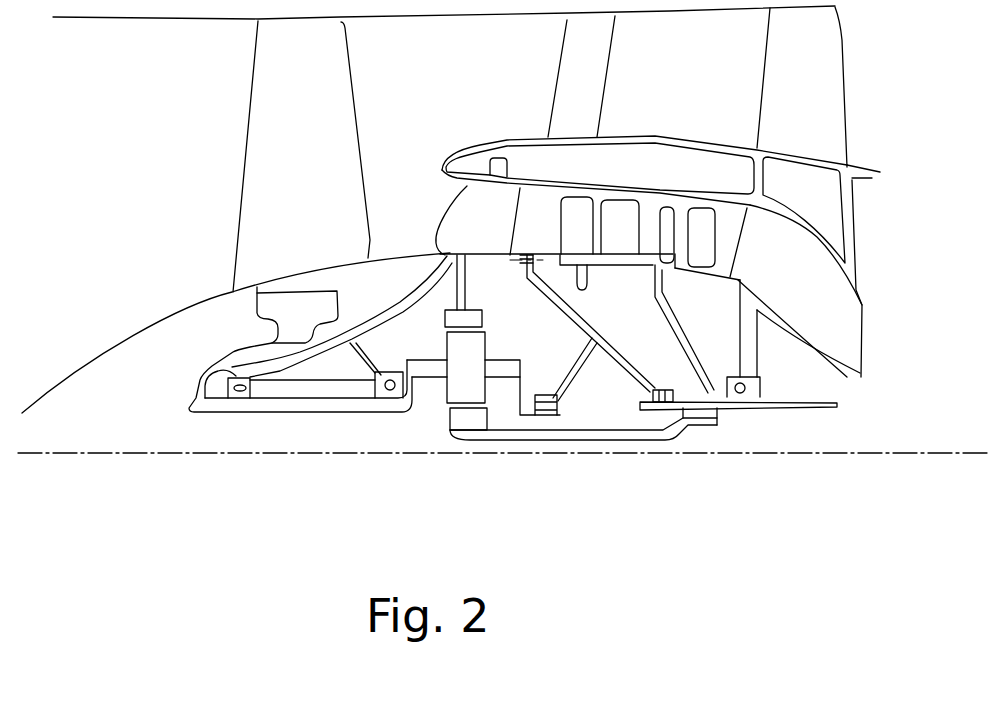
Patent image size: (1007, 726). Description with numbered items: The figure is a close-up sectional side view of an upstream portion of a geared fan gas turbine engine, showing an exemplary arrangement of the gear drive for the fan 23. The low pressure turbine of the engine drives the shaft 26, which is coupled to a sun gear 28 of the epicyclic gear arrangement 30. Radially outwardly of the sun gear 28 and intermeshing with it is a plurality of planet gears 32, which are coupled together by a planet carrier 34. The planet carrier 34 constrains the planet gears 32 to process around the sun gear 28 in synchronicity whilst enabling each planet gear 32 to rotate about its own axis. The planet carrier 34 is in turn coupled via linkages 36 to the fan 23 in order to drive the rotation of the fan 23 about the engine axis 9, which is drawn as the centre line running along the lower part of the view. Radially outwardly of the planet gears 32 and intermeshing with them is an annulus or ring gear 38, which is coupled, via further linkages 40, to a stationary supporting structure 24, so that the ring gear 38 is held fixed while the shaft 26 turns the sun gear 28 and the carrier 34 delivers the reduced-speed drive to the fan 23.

The engine axis 9 is at (223, 453).
The fan 23 is at (263, 160).
The stationary supporting structure 24 is at (477, 215).
The shaft 26 is at (625, 433).
The sun gear 28 is at (468, 420).
The epicyclic gear arrangement 30 is at (413, 430).
The planet gears 32 is at (450, 390).
The planet carrier 34 is at (510, 408).
The linkages 36 is at (420, 388).
The ring gear 38 is at (456, 318).
The linkages 40 is at (467, 293).